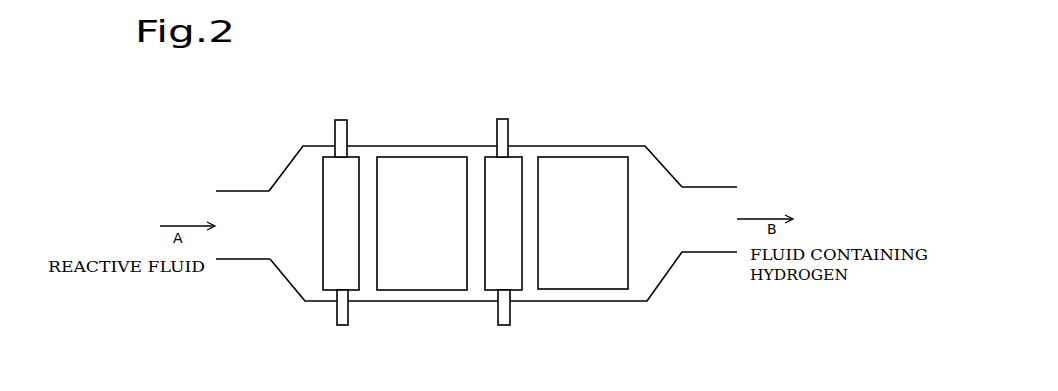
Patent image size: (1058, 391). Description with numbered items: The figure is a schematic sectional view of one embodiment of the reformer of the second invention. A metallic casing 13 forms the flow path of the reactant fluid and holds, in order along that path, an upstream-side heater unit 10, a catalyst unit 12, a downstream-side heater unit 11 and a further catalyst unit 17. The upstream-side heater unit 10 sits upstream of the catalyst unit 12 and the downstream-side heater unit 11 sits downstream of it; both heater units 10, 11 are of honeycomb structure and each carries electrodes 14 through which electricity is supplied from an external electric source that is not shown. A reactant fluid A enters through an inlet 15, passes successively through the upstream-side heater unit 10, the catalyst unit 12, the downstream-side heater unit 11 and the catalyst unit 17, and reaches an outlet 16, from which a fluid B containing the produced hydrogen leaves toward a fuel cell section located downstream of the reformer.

The upstream-side heater unit 10 is at (355, 149).
The downstream-side heater unit 11 is at (512, 154).
The catalyst unit 12 is at (426, 156).
The metallic casing 13 is at (293, 158).
The electrodes 14 is at (342, 120).
The inlet 15 is at (245, 198).
The outlet 16 is at (707, 190).
The catalyst unit 17 is at (588, 154).